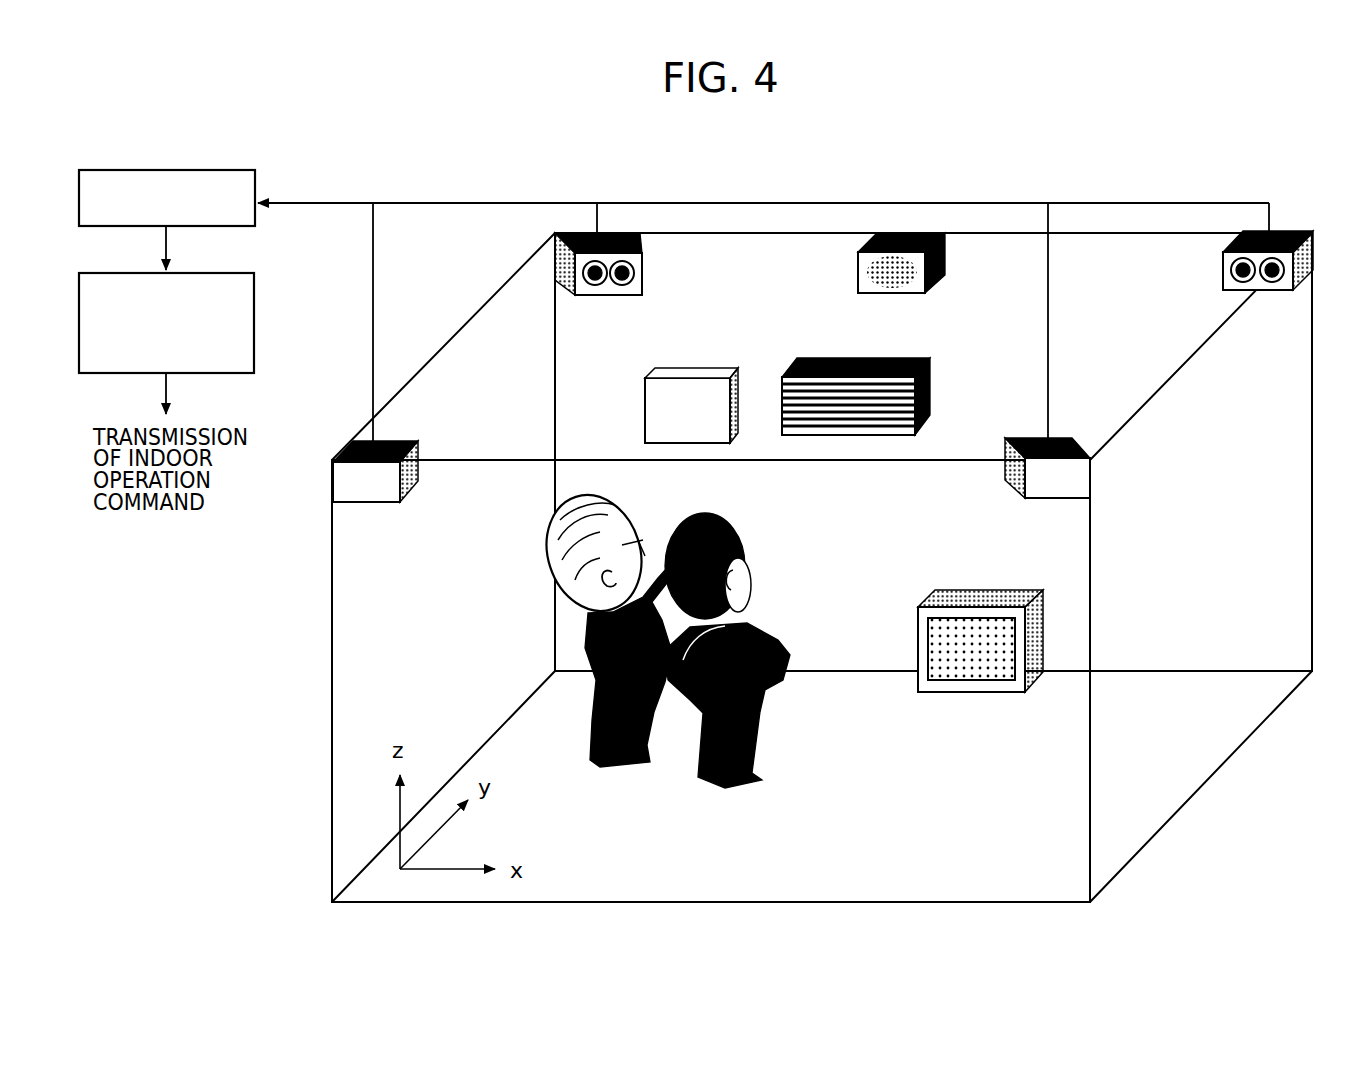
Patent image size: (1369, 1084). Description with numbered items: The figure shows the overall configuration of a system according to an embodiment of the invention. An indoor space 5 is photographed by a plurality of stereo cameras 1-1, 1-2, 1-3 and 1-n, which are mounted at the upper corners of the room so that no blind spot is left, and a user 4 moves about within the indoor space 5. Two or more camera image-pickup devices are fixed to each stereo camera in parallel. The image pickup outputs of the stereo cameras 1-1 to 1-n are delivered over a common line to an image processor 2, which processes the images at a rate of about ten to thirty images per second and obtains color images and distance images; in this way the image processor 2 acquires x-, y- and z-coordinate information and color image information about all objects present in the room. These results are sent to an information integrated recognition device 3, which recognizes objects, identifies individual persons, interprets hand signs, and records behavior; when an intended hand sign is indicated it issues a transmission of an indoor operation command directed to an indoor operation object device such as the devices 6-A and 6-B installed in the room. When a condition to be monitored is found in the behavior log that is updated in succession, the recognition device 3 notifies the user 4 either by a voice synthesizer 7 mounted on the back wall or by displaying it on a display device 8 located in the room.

The image processor 2 is at (224, 170).
The information integrated recognition device 3 is at (254, 287).
The stereo camera 1-1 is at (597, 295).
The stereo camera 1-2 is at (1265, 290).
The stereo camera 1-3 is at (1080, 447).
The stereo camera 1-n is at (360, 498).
The user 4 is at (773, 625).
The indoor space 5 is at (566, 902).
The indoor operation object device 6-A is at (892, 358).
The indoor operation object device 6-B is at (978, 590).
The voice synthesizer 7 is at (858, 265).
The display device 8 is at (699, 372).